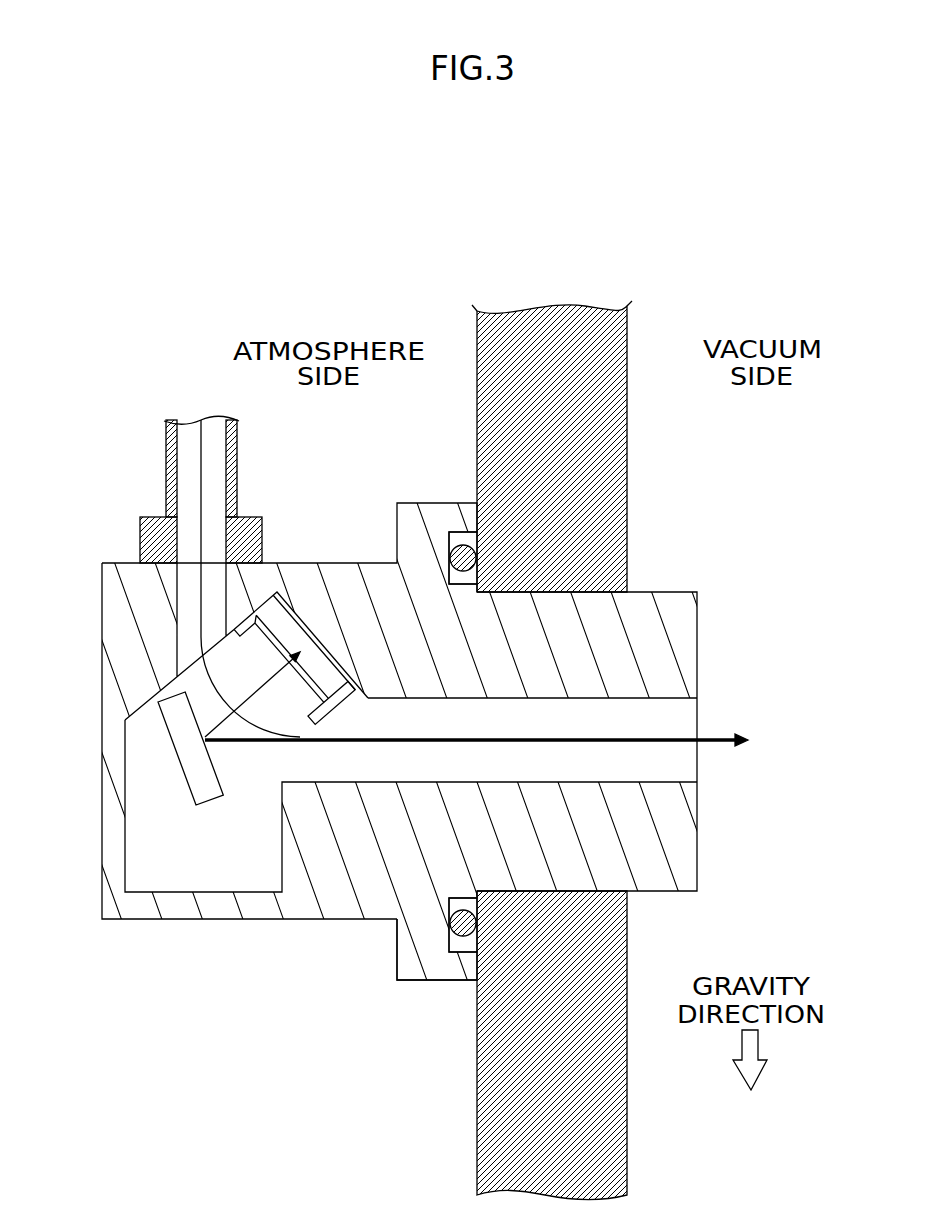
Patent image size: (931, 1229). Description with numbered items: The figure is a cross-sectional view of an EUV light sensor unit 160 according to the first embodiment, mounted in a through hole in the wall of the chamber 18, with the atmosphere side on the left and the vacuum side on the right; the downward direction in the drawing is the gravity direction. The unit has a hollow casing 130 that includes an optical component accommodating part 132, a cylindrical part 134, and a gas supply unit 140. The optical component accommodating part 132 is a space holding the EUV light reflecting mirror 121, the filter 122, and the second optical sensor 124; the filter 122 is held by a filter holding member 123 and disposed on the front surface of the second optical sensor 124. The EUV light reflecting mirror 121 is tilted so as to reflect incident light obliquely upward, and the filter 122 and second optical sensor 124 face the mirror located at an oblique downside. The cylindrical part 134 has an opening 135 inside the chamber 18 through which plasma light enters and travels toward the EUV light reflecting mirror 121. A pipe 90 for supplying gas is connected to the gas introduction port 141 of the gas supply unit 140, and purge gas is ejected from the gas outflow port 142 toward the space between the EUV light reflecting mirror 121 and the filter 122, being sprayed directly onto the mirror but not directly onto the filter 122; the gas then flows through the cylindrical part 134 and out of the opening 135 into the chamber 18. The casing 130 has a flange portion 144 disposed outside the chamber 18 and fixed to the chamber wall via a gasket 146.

The chamber 18 is at (623, 510).
The pipe 90 is at (166, 469).
The EUV light reflecting mirror 121 is at (197, 779).
The filter 122 is at (322, 688).
The filter holding member 123 is at (262, 595).
The second optical sensor 124 is at (312, 640).
The casing 130 is at (697, 858).
The optical component accommodating part 132 is at (272, 774).
The cylindrical part 134 is at (660, 700).
The opening 135 is at (692, 756).
The gas supply unit 140 is at (187, 593).
The gas introduction port 141 is at (195, 563).
The gas outflow port 142 is at (180, 658).
The flange portion 144 is at (397, 952).
The gasket 146 is at (450, 556).
The EUV light sensor unit 160 is at (699, 585).